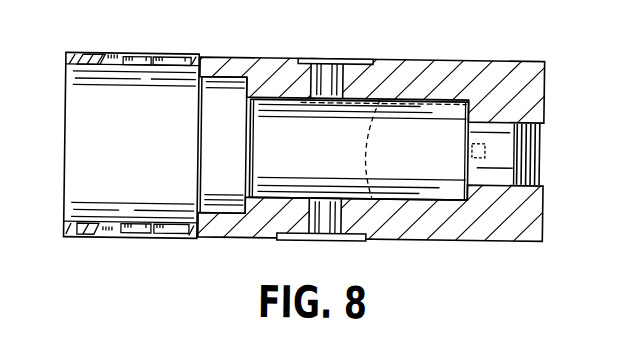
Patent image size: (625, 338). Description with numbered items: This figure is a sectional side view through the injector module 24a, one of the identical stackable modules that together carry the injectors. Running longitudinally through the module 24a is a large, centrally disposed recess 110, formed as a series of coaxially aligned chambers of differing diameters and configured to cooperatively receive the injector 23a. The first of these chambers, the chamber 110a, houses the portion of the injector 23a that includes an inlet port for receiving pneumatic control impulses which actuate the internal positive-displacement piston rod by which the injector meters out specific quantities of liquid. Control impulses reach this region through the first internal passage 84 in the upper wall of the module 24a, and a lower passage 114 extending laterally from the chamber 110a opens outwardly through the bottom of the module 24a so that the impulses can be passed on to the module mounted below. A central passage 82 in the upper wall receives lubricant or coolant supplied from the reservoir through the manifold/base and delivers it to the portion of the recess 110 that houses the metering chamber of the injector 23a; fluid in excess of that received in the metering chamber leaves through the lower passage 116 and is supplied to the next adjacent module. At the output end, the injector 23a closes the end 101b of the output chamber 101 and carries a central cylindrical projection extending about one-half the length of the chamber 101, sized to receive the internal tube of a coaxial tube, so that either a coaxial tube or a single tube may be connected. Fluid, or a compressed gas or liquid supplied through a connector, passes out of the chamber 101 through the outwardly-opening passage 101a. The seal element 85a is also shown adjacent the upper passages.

The injector module 24a is at (550, 79).
The central recess 110 is at (59, 101).
The first chamber of central recess 110a is at (90, 133).
The first internal passage 84 is at (149, 64).
The seal ring 85a is at (169, 64).
The lower passage 114 is at (148, 229).
The central passage 82 is at (327, 66).
The lower passage 116 is at (324, 233).
The injector 23a is at (421, 128).
The output chamber 101 is at (501, 116).
The outwardly-opening passage 101a is at (543, 175).
The end of output chamber 101b is at (470, 178).